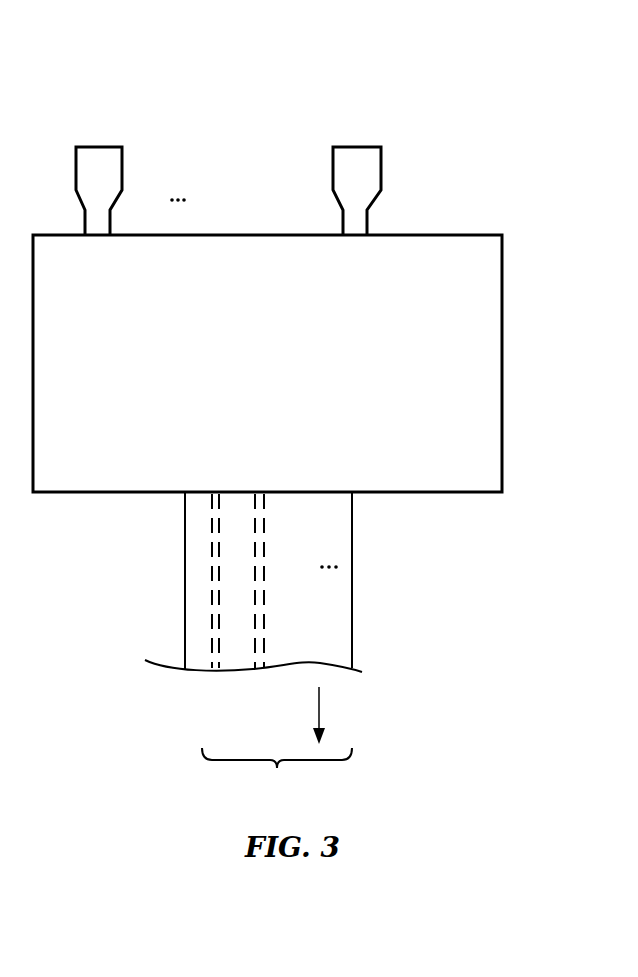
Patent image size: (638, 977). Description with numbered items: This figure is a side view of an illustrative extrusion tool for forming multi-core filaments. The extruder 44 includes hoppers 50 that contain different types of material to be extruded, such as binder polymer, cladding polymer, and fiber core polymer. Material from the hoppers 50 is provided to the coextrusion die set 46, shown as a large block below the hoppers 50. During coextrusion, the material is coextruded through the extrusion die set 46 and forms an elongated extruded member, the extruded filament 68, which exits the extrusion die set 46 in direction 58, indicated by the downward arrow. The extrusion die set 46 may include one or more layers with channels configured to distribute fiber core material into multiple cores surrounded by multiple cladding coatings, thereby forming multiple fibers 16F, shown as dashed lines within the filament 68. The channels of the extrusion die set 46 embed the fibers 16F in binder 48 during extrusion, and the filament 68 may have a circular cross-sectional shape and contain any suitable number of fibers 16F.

The extruder 44 is at (486, 58).
The coextrusion die set 46 is at (502, 299).
The hoppers 50 is at (122, 150).
The binder 48 is at (203, 522).
The fibers 16F is at (210, 578).
The direction 58 is at (321, 712).
The extruded filament 68 is at (277, 775).